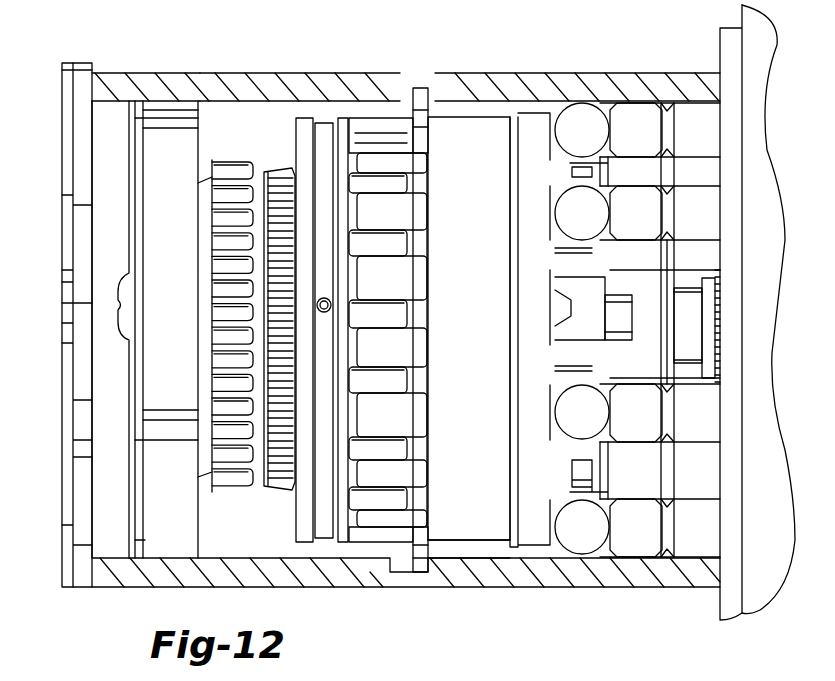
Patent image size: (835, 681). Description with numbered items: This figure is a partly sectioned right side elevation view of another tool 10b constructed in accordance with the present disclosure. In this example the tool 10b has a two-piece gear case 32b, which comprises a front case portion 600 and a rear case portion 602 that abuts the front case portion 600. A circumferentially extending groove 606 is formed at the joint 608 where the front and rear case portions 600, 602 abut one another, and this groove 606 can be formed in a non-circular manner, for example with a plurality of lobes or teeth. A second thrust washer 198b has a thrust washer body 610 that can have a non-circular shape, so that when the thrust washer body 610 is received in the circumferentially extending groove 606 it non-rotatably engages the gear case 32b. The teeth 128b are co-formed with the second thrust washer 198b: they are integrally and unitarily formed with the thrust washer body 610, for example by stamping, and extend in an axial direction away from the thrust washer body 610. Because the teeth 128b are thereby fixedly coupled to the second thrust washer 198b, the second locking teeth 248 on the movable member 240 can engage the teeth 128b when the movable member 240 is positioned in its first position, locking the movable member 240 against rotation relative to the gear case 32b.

The tool 10b is at (110, 56).
The gear case 32b is at (165, 86).
The rear case portion 602 is at (216, 82).
The teeth 128b is at (370, 158).
The second thrust washer 198b is at (425, 115).
The front case portion 600 is at (635, 92).
The thrust washer body 610 is at (419, 179).
The movable member 240 is at (305, 522).
The second locking teeth 248 is at (370, 500).
The circumferentially extending groove 606 is at (420, 572).
The joint 608 is at (436, 567).